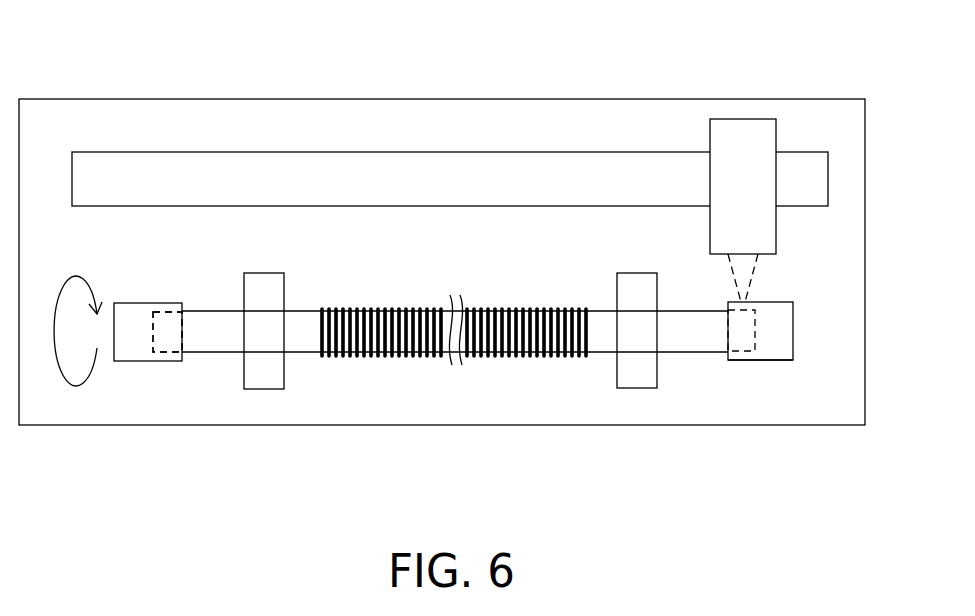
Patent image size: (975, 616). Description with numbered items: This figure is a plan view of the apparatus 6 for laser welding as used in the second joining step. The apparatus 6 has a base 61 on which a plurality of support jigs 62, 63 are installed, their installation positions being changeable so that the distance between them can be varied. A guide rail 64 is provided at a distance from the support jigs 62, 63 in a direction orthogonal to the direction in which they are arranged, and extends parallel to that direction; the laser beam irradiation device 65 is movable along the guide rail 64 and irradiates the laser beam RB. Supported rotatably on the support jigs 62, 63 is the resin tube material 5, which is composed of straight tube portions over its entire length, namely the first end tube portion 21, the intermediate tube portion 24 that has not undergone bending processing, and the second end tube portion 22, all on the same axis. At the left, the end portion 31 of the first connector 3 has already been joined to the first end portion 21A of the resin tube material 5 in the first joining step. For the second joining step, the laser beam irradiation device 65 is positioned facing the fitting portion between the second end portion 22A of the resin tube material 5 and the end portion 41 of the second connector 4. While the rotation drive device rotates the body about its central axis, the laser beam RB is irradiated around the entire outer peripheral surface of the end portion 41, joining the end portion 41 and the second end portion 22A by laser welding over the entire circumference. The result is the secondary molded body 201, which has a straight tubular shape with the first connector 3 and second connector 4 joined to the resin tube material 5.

The apparatus 6 is at (780, 83).
The base 61 is at (562, 98).
The guide rail 64 is at (410, 153).
The laser beam irradiation device 65 is at (736, 119).
The laser beam RB is at (727, 282).
The secondary molded body 201 is at (810, 372).
The first connector 3 is at (122, 361).
The end portion of the first connector 31 is at (163, 361).
The first end portion 21A is at (170, 347).
The first end tube portion 21 is at (303, 352).
The second end tube portion 22 is at (605, 352).
The second end portion 22A is at (740, 352).
The intermediate tube portion 24 is at (400, 358).
The resin tube material 5 is at (454, 399).
The support jig 62 is at (265, 389).
The support jig 63 is at (635, 388).
The second connector 4 is at (787, 360).
The end portion of the second connector 41 is at (745, 360).